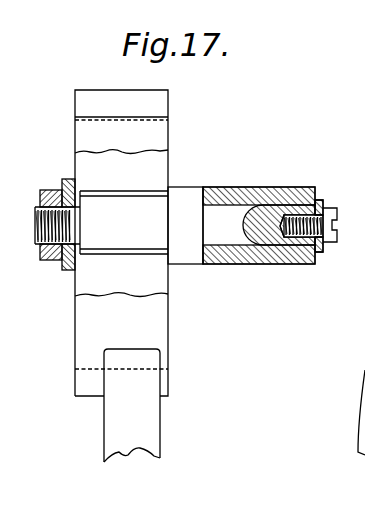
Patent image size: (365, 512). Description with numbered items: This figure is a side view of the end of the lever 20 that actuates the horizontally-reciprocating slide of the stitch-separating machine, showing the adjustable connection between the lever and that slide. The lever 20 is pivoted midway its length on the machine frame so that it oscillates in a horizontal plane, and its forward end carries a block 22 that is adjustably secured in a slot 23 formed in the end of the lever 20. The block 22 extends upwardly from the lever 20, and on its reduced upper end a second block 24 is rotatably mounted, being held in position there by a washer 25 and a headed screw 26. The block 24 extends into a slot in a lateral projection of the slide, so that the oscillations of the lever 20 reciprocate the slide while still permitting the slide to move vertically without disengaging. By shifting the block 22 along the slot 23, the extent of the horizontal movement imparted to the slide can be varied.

The lever 20 is at (167, 341).
The block 22 is at (186, 192).
The slot 23 is at (78, 284).
The block 24 is at (260, 187).
The washer 25 is at (317, 202).
The headed screw 26 is at (333, 210).